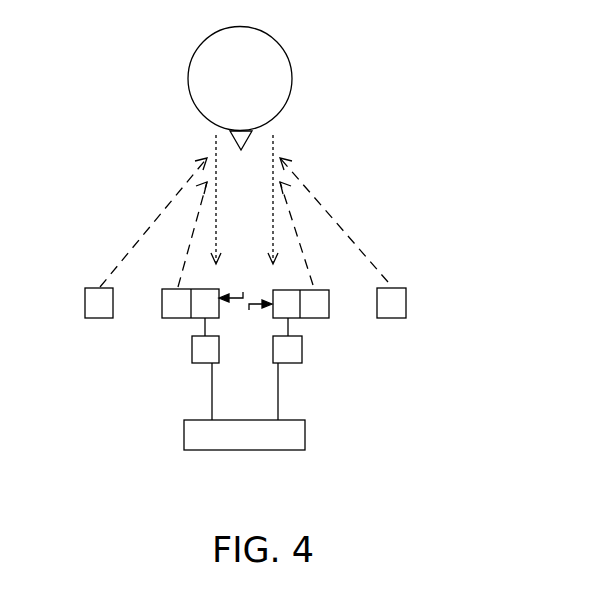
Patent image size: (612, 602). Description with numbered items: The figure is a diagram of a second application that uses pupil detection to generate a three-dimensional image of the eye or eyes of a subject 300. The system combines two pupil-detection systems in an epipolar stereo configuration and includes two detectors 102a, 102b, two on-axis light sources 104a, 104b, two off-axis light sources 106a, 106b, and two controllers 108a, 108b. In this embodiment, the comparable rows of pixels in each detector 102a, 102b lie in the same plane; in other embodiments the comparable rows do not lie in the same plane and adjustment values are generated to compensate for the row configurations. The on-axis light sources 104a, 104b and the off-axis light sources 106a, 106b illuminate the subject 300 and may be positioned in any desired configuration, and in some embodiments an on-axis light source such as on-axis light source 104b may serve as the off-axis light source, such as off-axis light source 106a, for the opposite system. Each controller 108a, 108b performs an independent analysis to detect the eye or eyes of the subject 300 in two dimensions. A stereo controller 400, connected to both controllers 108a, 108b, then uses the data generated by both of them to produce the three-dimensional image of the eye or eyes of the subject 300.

The subject 300 is at (292, 82).
The detector 102a is at (246, 285).
The detector 102b is at (248, 321).
The on-axis light source 104a is at (163, 318).
The on-axis light source 104b is at (322, 318).
The off-axis light source 106a is at (85, 310).
The off-axis light source 106b is at (406, 303).
The controller 108a is at (192, 363).
The controller 108b is at (298, 363).
The stereo controller 400 is at (184, 436).